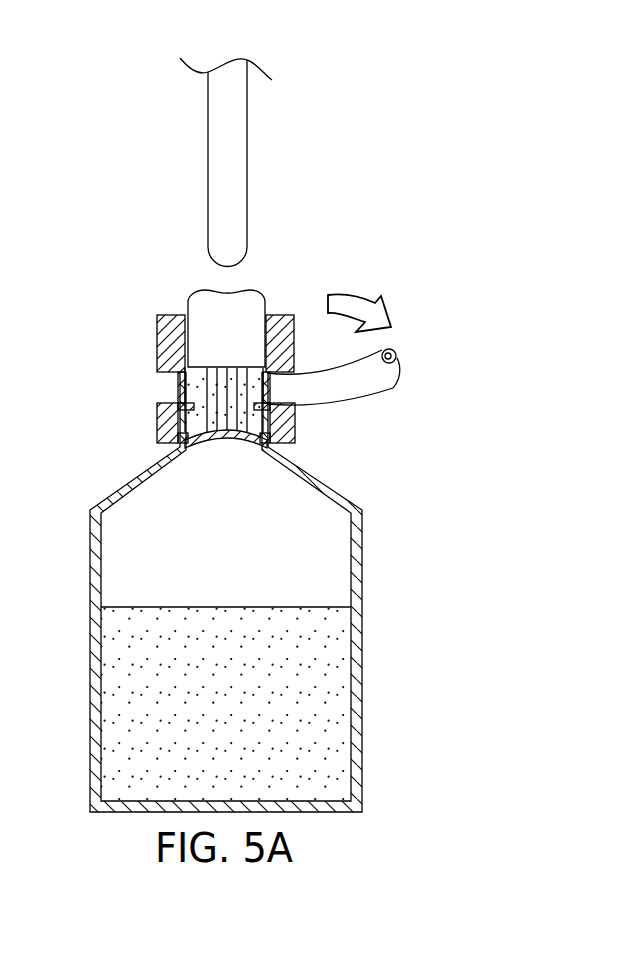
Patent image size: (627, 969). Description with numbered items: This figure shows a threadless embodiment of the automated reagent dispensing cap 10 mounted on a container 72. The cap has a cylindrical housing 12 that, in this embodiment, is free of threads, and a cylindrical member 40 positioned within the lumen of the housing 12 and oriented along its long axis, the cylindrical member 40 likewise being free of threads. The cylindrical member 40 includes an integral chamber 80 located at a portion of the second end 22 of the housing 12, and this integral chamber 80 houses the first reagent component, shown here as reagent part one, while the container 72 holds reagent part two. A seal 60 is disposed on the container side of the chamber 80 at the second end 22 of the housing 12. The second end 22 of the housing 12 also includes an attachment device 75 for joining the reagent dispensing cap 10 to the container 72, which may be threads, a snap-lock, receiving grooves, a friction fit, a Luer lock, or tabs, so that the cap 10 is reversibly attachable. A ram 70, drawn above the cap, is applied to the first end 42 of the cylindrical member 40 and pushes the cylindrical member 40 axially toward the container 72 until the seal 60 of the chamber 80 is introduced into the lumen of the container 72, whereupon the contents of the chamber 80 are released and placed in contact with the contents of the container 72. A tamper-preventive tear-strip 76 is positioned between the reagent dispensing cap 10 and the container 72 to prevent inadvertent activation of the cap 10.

The reagent dispensing cap 10 is at (170, 278).
The housing 12 is at (300, 351).
The second end 22 is at (293, 440).
The cylindrical member 40 is at (202, 333).
The first end 42 is at (251, 295).
The seal 60 is at (228, 441).
The ram 70 is at (220, 139).
The container 72 is at (95, 703).
The attachment device 75 is at (162, 427).
The tamper-preventive tear-strip 76 is at (397, 356).
The integral chamber 80 is at (202, 389).